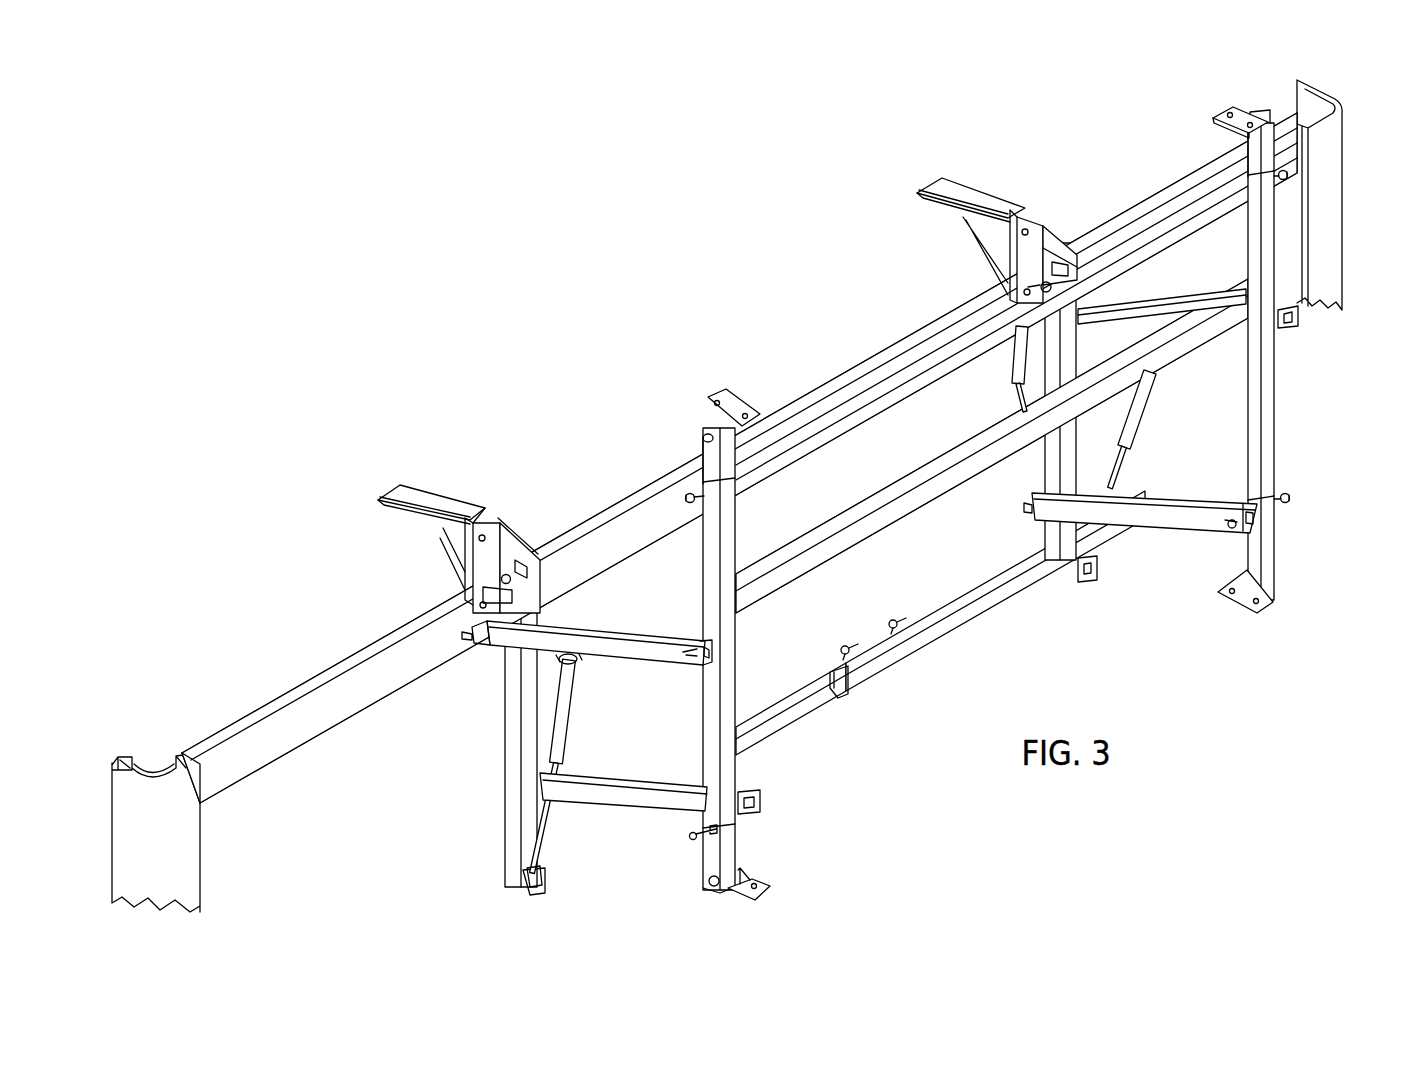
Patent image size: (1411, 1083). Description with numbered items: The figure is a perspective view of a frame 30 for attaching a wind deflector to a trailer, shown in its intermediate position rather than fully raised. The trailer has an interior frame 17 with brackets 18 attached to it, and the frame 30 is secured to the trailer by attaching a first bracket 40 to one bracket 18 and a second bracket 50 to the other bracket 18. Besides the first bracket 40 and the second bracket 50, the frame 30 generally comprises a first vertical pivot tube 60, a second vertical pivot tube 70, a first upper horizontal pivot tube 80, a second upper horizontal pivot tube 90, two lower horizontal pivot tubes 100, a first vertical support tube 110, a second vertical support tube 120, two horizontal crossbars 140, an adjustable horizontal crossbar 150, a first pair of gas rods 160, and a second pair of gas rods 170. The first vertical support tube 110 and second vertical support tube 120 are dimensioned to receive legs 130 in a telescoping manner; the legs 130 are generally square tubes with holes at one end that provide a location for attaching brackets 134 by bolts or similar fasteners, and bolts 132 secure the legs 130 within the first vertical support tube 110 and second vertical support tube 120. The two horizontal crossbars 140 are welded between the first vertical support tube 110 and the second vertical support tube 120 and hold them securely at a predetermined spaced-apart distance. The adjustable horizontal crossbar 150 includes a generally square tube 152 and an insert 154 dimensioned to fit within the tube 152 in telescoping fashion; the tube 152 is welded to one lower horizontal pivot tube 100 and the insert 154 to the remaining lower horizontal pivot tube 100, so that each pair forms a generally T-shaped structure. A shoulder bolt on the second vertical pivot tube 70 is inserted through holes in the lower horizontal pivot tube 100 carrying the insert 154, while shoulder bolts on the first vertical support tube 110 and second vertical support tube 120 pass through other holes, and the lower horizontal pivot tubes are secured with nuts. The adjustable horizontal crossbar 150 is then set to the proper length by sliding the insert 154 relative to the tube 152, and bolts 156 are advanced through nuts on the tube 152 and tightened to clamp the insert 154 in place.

The interior frame 17 is at (302, 706).
The brackets 18 is at (427, 498).
The frame 30 is at (922, 749).
The first bracket 40 is at (1033, 228).
The second bracket 50 is at (498, 533).
The first vertical pivot tube 60 is at (1073, 325).
The second vertical pivot tube 70 is at (512, 687).
The first upper horizontal pivot tube 80 is at (1145, 310).
The second upper horizontal pivot tube 90 is at (608, 638).
The lower horizontal pivot tubes 100 is at (608, 775).
The first vertical support tube 110 is at (1270, 420).
The second vertical support tube 120 is at (727, 675).
The legs 130 is at (712, 462).
The bolts 132 is at (690, 496).
The brackets 134 is at (730, 403).
The horizontal crossbars 140 is at (848, 418).
The adjustable horizontal crossbar 150 is at (940, 629).
The tube 152 is at (970, 592).
The insert 154 is at (785, 722).
The bolts 156 is at (846, 644).
The first pair of gas rods 160 is at (1137, 410).
The second pair of gas rods 170 is at (1020, 365).